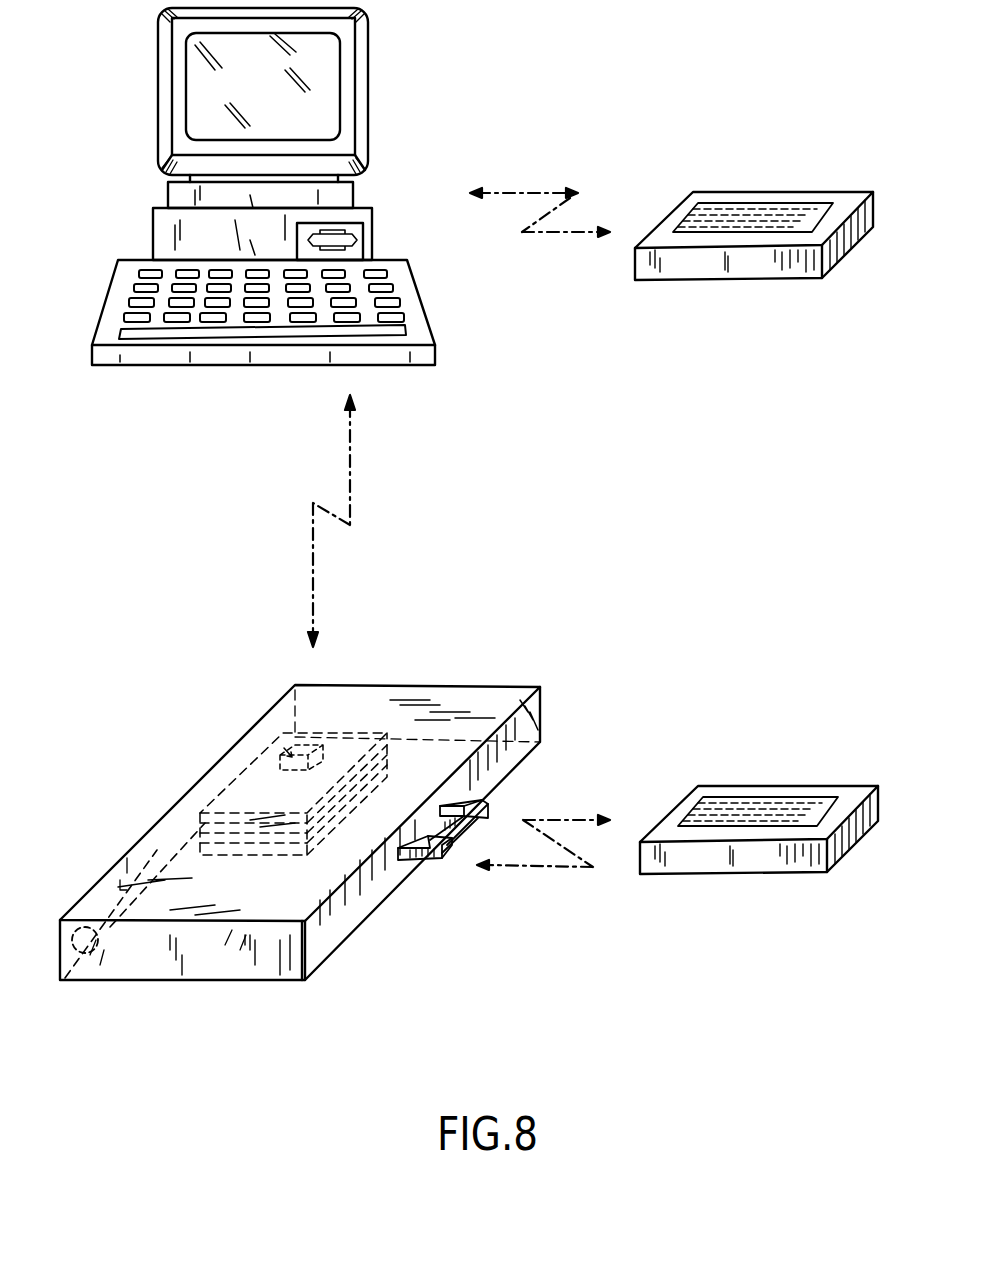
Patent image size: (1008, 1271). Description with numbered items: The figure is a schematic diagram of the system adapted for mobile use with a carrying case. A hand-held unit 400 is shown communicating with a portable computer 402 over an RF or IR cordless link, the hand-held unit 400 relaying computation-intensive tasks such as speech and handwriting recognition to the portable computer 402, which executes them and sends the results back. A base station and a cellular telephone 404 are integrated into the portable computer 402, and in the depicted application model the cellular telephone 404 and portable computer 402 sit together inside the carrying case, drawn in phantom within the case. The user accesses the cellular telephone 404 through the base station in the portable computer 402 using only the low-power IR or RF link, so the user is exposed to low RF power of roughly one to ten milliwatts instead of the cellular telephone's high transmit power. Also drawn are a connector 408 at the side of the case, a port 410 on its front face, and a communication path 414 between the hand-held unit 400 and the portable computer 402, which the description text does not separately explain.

The hand-held unit 400 is at (752, 267).
The portable computer 402 is at (152, 226).
The cellular telephone 404 is at (285, 733).
The connector 408 is at (430, 863).
The port 410 is at (77, 978).
The communication path 414 is at (312, 577).